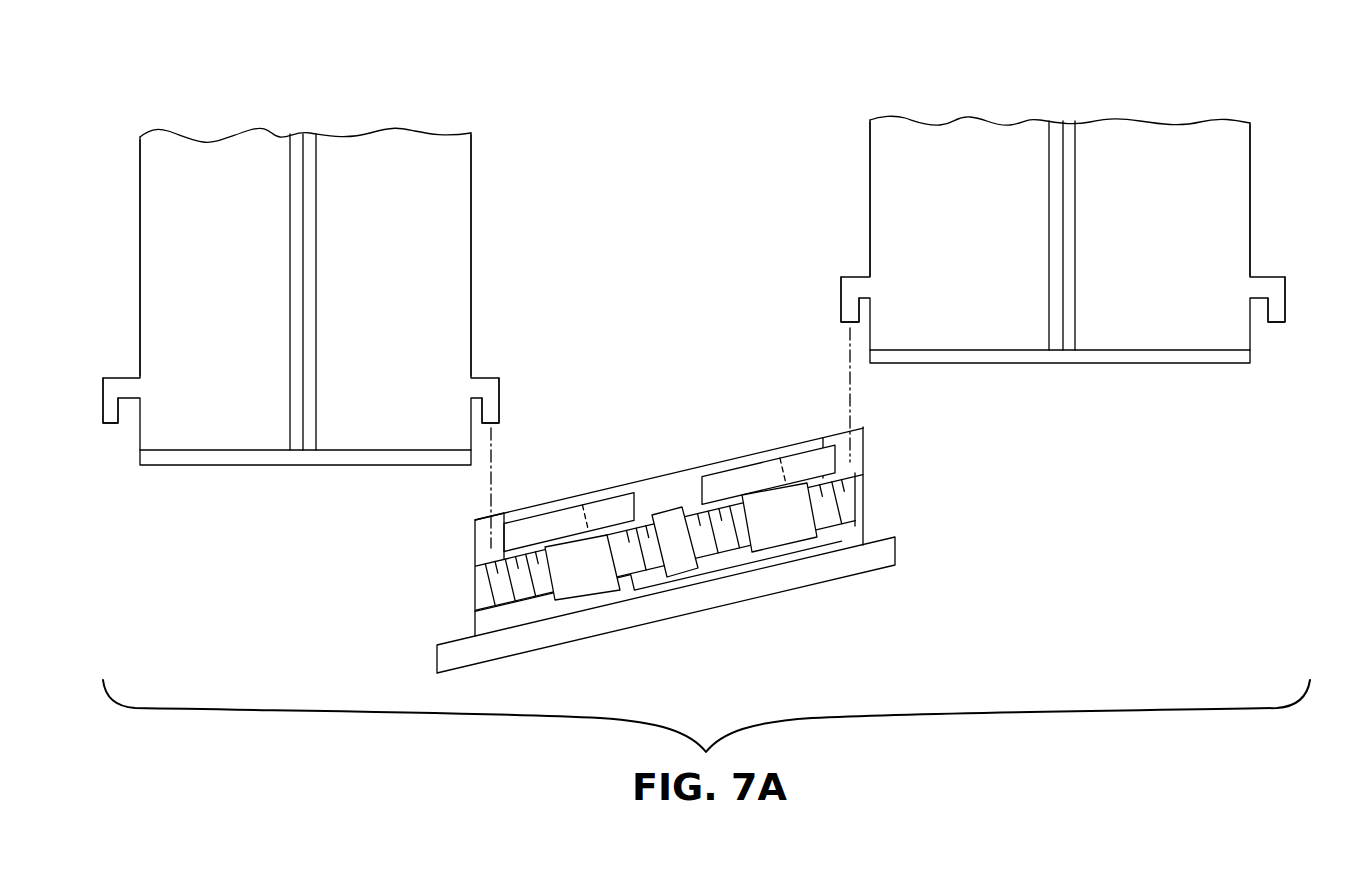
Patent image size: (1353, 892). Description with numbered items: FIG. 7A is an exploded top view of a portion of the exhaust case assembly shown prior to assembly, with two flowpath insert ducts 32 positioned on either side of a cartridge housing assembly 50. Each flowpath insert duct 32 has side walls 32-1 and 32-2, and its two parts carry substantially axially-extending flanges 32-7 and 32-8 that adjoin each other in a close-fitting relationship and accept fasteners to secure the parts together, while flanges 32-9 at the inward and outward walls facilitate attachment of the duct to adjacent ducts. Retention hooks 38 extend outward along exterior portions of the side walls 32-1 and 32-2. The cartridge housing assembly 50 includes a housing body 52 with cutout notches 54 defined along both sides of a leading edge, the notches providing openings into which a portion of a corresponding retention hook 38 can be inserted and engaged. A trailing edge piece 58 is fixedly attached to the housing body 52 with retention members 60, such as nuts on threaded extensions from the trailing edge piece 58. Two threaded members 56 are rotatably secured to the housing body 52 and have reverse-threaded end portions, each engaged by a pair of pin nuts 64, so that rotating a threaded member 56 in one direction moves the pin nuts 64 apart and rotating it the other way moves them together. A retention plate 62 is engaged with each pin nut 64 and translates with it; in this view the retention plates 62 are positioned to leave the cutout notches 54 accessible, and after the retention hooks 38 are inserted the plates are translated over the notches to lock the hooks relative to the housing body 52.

The flowpath insert duct 32 is at (228, 461).
The side wall 32-1 is at (149, 310).
The side wall 32-2 is at (471, 213).
The axially-extending flange 32-7 is at (296, 437).
The axially-extending flange 32-8 is at (310, 440).
The flange 32-9 is at (397, 466).
The retention hook 38 is at (113, 414).
The cartridge housing assembly 50 is at (695, 541).
The housing body 52 is at (668, 483).
The cutout notch 54 is at (482, 547).
The threaded member 56 is at (673, 522).
The trailing edge piece 58 is at (818, 572).
The retention member 60 is at (713, 568).
The retention plate 62 is at (620, 510).
The pin nut 64 is at (577, 553).